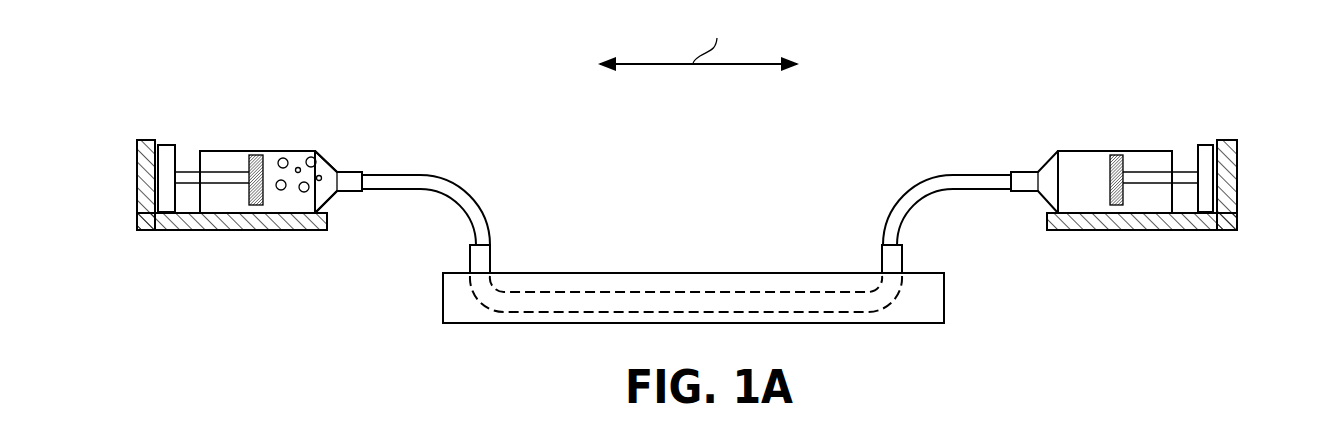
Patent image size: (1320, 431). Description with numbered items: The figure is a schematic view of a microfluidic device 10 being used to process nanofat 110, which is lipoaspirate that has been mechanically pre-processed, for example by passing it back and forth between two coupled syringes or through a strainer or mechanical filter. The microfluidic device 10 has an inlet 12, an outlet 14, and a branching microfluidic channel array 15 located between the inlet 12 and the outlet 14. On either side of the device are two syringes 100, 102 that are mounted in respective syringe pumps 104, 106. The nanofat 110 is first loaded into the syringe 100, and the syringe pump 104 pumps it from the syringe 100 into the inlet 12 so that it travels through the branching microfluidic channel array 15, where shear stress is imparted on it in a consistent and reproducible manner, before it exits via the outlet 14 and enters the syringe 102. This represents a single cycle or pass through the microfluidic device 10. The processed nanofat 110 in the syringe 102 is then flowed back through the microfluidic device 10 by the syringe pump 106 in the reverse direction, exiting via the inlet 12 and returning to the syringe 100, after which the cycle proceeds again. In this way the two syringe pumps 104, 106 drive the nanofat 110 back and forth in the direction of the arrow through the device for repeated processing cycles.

The microfluidic device 10 is at (687, 168).
The inlet 12 is at (490, 262).
The outlet 14 is at (880, 262).
The branching microfluidic channel array 15 is at (706, 292).
The syringe 100 is at (274, 150).
The syringe 102 is at (1147, 150).
The syringe pump 104 is at (218, 230).
The syringe pump 106 is at (1165, 230).
The nanofat 110 is at (317, 151).